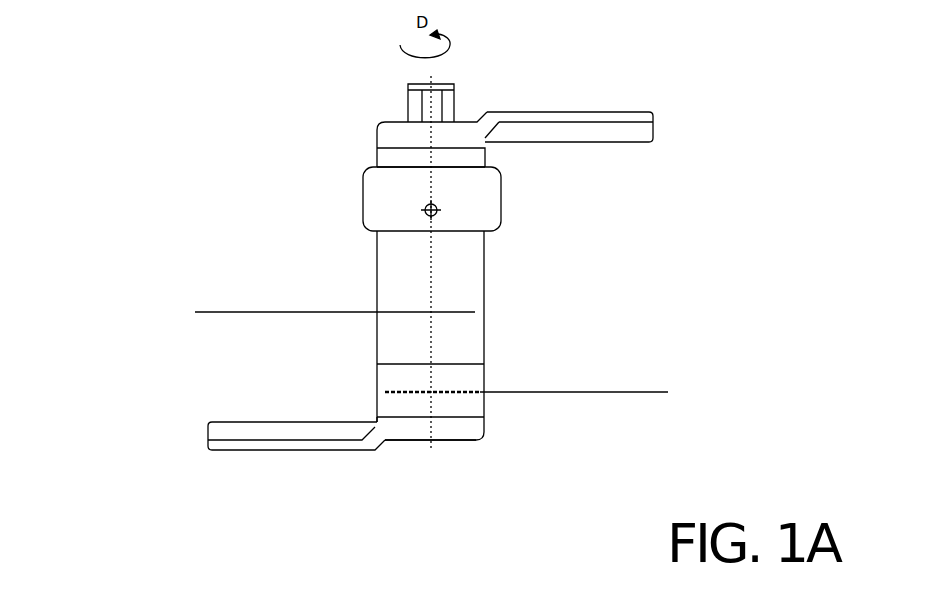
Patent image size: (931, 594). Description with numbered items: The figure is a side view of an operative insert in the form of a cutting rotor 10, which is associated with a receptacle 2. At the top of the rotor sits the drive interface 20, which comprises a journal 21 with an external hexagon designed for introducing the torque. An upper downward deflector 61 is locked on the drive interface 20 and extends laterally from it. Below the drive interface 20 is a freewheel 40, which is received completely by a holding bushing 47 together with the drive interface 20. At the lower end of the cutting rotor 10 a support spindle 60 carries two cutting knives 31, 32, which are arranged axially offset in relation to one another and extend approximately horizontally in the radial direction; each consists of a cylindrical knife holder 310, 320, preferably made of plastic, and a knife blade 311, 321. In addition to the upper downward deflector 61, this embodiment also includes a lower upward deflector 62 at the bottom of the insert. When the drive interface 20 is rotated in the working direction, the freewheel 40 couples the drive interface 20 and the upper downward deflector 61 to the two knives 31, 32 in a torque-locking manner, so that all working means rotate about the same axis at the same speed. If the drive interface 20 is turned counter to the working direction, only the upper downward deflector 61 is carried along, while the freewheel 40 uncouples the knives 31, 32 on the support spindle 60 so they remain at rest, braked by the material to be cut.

The cutting rotor 10 is at (198, 71).
The drive interface 20 is at (361, 122).
The journal 21 is at (443, 105).
The upper downward deflector 61 is at (583, 127).
The freewheel 40 is at (506, 202).
The holding bushing 47 is at (385, 190).
The cutting knife 31 is at (255, 284).
The knife holder 310 is at (393, 263).
The knife blade 311 is at (265, 313).
The knife blade 321 is at (565, 390).
The cutting knife 32 is at (507, 407).
The knife holder 320 is at (470, 407).
The receptacle 2 is at (440, 440).
The support spindle 60 is at (365, 383).
The lower upward deflector 62 is at (278, 438).